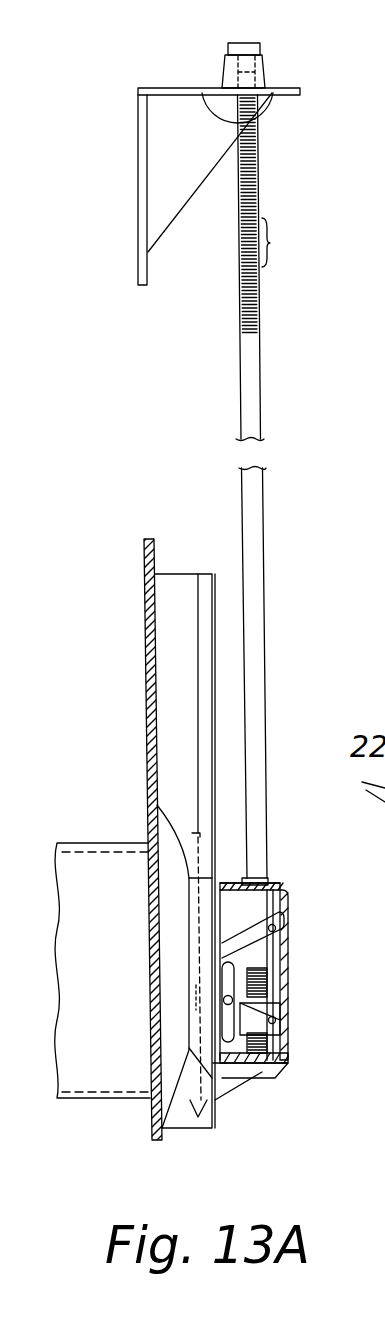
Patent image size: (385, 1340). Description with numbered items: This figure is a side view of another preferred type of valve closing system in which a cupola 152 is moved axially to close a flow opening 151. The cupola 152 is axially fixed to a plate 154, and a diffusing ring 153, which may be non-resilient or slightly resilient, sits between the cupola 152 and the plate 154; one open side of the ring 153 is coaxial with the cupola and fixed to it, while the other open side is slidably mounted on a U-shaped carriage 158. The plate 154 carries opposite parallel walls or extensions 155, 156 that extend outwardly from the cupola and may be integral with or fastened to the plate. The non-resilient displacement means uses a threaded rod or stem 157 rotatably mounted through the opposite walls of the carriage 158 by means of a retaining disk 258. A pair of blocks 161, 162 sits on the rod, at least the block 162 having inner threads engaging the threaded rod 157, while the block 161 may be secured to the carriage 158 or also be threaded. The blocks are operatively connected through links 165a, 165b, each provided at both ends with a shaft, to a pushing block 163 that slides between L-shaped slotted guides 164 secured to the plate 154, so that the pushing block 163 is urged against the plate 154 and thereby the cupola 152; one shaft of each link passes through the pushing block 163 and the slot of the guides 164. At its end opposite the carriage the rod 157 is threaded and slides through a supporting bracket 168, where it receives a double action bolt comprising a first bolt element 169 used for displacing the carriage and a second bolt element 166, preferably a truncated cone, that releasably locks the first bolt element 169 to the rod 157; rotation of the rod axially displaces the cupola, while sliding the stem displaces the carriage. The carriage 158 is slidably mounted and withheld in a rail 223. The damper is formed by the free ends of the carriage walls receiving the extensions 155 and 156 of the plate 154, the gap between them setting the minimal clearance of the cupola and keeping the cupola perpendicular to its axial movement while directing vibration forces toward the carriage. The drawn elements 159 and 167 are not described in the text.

The flow opening 151 is at (93, 1082).
The cupola 152 is at (175, 917).
The diffusing ring 153 is at (192, 937).
The plate 154 is at (200, 1000).
The wall or extension 155 is at (245, 876).
The wall or extension 156 is at (228, 1065).
The threaded rod or stem 157 is at (252, 662).
The U-shaped carriage 158 is at (207, 1055).
The mounting plate 159 is at (145, 558).
The block 161 is at (284, 953).
The block 162 is at (288, 994).
The pushing block 163 is at (288, 970).
The L-shaped slotted guides 164 is at (229, 1065).
The link 165a is at (276, 930).
The link 165b is at (276, 1022).
The second bolt element 166 is at (259, 44).
The threaded portion 167 is at (270, 244).
The supporting bracket 168 is at (240, 132).
The first bolt element 169 is at (265, 72).
The rail 223 is at (182, 613).
The retaining disk 258 is at (268, 884).